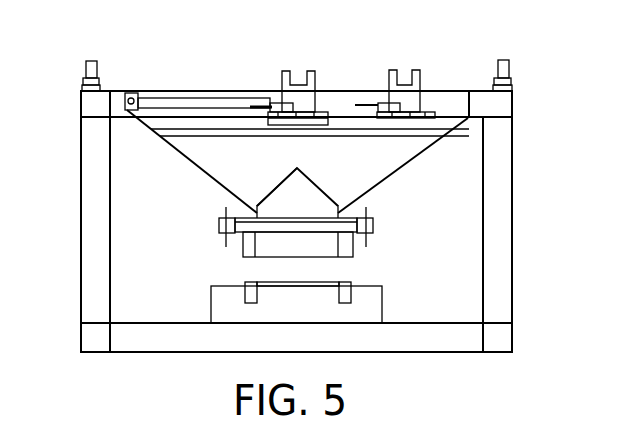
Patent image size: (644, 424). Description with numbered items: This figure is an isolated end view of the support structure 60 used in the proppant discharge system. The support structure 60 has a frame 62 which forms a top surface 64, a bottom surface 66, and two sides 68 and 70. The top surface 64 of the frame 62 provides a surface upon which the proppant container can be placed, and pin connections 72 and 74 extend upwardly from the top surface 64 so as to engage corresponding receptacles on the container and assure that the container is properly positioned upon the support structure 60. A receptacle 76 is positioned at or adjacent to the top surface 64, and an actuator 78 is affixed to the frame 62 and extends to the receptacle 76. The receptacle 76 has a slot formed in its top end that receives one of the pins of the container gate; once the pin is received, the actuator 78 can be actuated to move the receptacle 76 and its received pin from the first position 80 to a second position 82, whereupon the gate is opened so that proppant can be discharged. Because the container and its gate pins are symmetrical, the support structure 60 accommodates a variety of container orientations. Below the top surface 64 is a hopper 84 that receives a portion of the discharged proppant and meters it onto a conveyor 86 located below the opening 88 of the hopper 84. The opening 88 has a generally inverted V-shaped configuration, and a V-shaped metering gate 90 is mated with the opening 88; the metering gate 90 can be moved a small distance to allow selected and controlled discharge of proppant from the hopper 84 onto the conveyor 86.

The support structure 60 is at (292, 196).
The frame 62 is at (95, 210).
The top surface 64 is at (107, 103).
The bottom surface 66 is at (157, 343).
The side 68 is at (85, 303).
The side 70 is at (500, 212).
The pin connection 72 is at (84, 70).
The pin connection 74 is at (500, 61).
The receptacle 76 is at (318, 72).
The actuator 78 is at (187, 100).
The first position 80 is at (287, 70).
The second position 82 is at (405, 75).
The hopper 84 is at (415, 155).
The conveyor 86 is at (243, 247).
The opening 88 is at (275, 187).
The metering gate 90 is at (307, 197).